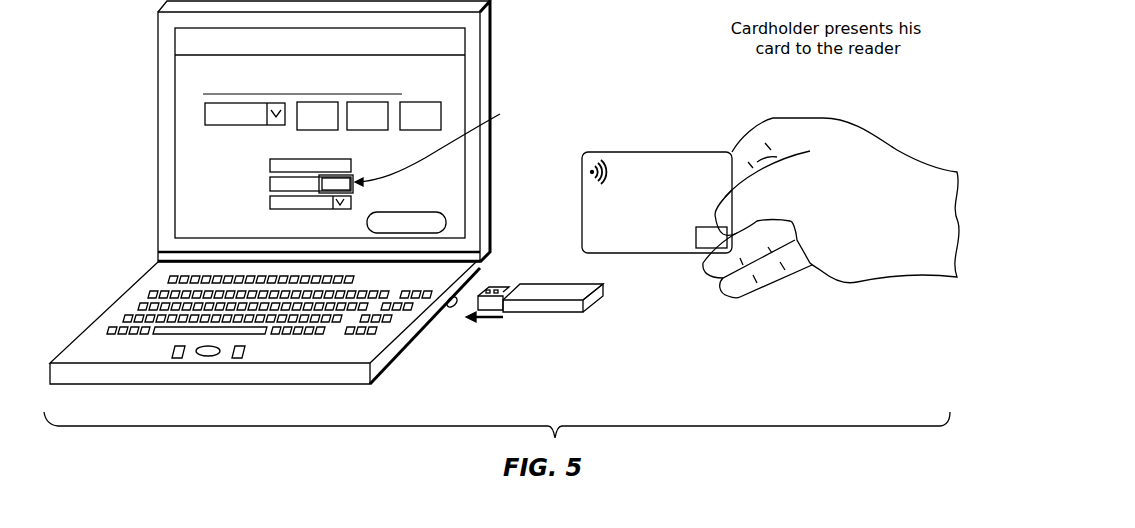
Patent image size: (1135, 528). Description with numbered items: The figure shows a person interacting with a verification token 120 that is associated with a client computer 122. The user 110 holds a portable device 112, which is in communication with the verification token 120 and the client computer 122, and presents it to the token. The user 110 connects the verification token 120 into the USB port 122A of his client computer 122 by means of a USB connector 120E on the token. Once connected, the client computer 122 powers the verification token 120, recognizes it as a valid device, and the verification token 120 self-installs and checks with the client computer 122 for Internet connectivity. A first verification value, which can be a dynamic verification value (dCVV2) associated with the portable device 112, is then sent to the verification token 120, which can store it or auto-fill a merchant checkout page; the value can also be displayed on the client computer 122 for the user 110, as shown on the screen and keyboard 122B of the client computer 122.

The user 110 is at (827, 260).
The portable device 112 is at (673, 160).
The verification token 120 is at (560, 308).
The USB connector 120E is at (502, 295).
The client computer 122 is at (393, 365).
The USB port 122A is at (455, 310).
The display and keyboard (user interface) of computer 122B is at (158, 290).